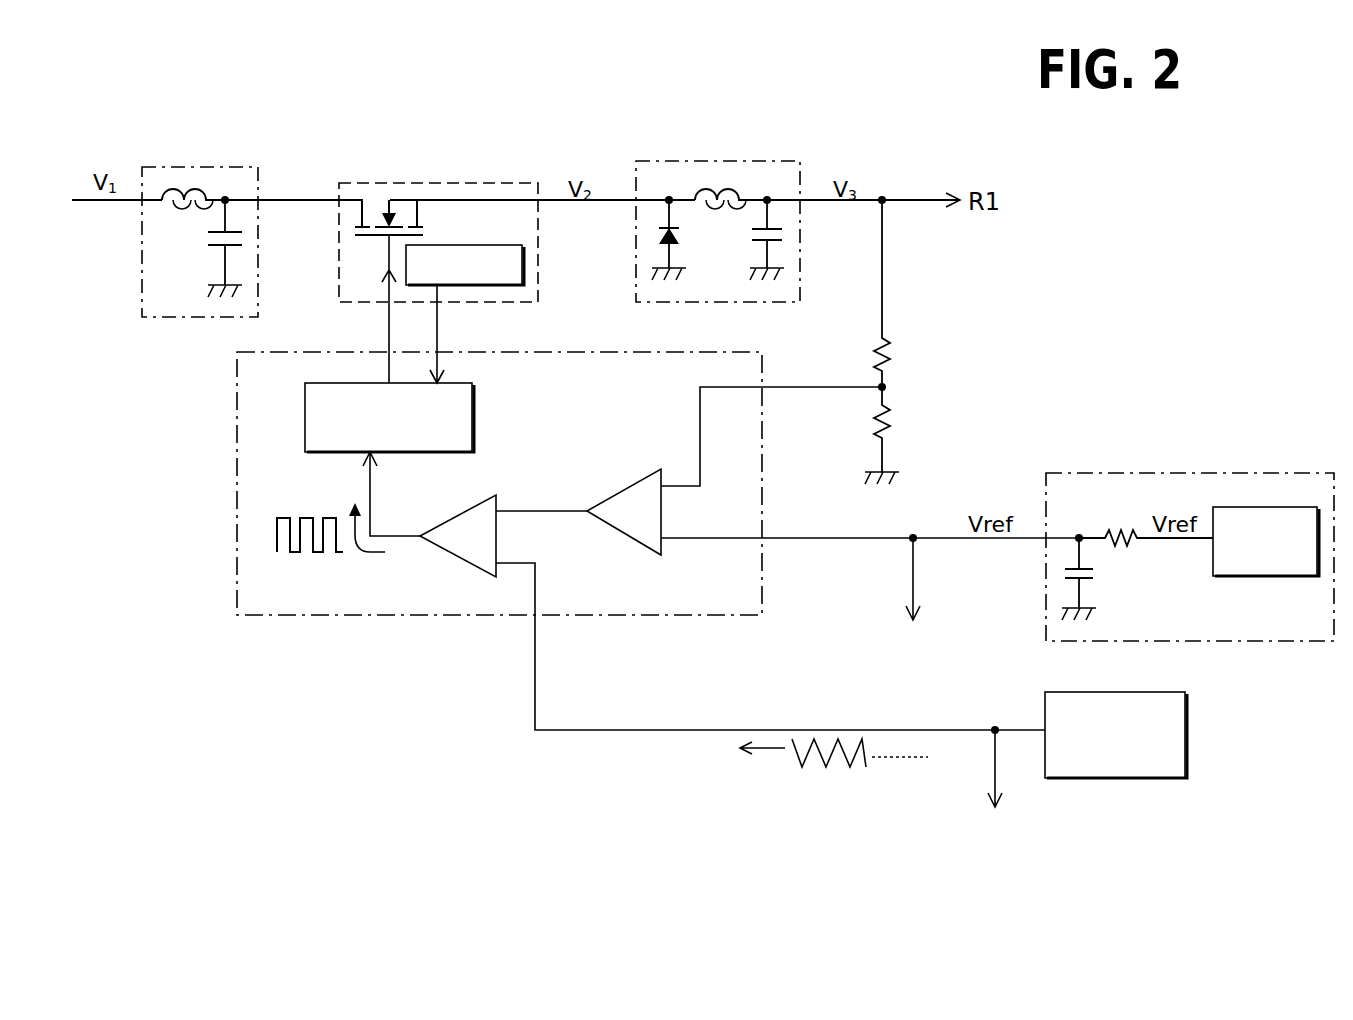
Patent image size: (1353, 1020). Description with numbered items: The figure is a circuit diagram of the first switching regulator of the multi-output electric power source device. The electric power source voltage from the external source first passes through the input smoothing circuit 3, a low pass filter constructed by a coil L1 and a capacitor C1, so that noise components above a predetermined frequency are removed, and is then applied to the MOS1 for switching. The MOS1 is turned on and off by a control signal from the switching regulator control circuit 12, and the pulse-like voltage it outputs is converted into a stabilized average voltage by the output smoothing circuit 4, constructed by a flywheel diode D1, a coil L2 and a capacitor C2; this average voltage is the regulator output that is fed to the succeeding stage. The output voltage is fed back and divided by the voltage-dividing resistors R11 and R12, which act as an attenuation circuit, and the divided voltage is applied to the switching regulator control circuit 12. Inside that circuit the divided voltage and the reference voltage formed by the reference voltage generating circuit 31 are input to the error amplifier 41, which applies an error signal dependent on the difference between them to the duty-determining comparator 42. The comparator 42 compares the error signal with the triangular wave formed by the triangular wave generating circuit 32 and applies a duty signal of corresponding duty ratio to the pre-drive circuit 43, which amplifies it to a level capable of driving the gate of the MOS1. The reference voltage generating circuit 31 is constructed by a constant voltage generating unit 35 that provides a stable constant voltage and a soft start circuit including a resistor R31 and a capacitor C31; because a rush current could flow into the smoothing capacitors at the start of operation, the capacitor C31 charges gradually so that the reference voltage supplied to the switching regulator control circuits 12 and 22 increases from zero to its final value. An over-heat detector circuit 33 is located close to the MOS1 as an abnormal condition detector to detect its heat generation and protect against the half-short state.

The input smoothing circuit 3 is at (140, 268).
The output smoothing circuit 4 is at (800, 253).
The switching regulator control circuit 12 is at (237, 472).
The switching regulator control circuit 22 is at (955, 691).
The reference voltage generating circuit 31 is at (1296, 470).
The triangular wave generating circuit 32 is at (1188, 728).
The over-heat detector circuit 33 is at (463, 245).
The constant voltage generating unit 35 is at (1265, 577).
The error amplifier 41 is at (630, 483).
The duty-determining comparator 42 is at (462, 508).
The pre-drive circuit 43 is at (474, 417).
The coil L1 is at (181, 217).
The capacitor C1 is at (205, 239).
The MOS transistor MOS1 is at (380, 188).
The coil L2 is at (731, 187).
The flywheel diode D1 is at (686, 240).
The capacitor C2 is at (754, 240).
The voltage-dividing resistor R11 is at (888, 346).
The voltage-dividing resistor R12 is at (888, 426).
The resistor R31 is at (1123, 530).
The capacitor C31 is at (1095, 575).